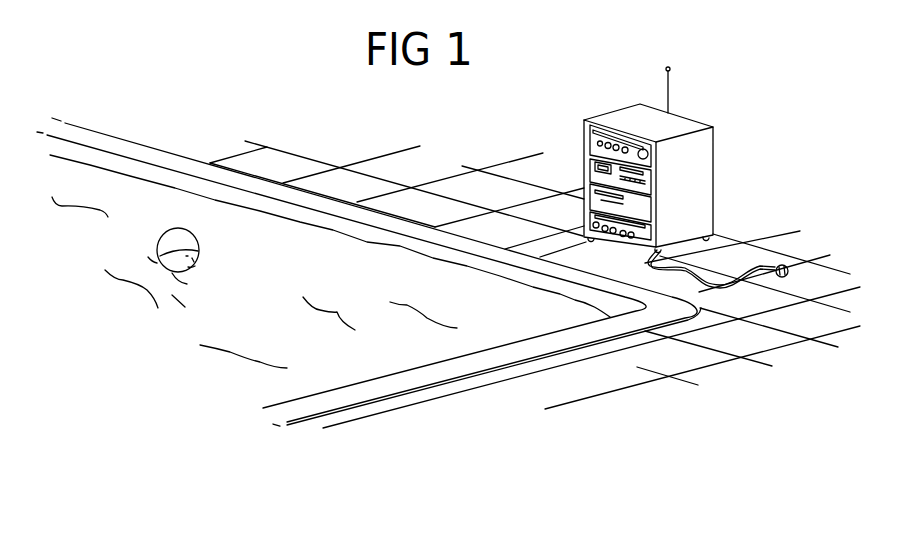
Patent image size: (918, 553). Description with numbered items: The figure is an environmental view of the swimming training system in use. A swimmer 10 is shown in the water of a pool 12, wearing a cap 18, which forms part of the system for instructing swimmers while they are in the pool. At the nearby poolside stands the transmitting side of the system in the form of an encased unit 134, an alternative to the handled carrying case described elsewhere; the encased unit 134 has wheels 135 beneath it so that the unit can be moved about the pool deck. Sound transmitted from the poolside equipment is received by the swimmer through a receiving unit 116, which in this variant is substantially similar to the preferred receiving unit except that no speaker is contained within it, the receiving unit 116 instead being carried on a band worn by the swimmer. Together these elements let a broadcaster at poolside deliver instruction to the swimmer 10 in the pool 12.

The swimmer 10 is at (200, 274).
The pool 12 is at (363, 369).
The cap 18 is at (187, 237).
The receiving unit 116 is at (707, 150).
The encased unit 134 is at (715, 205).
The wheels 135 is at (717, 233).